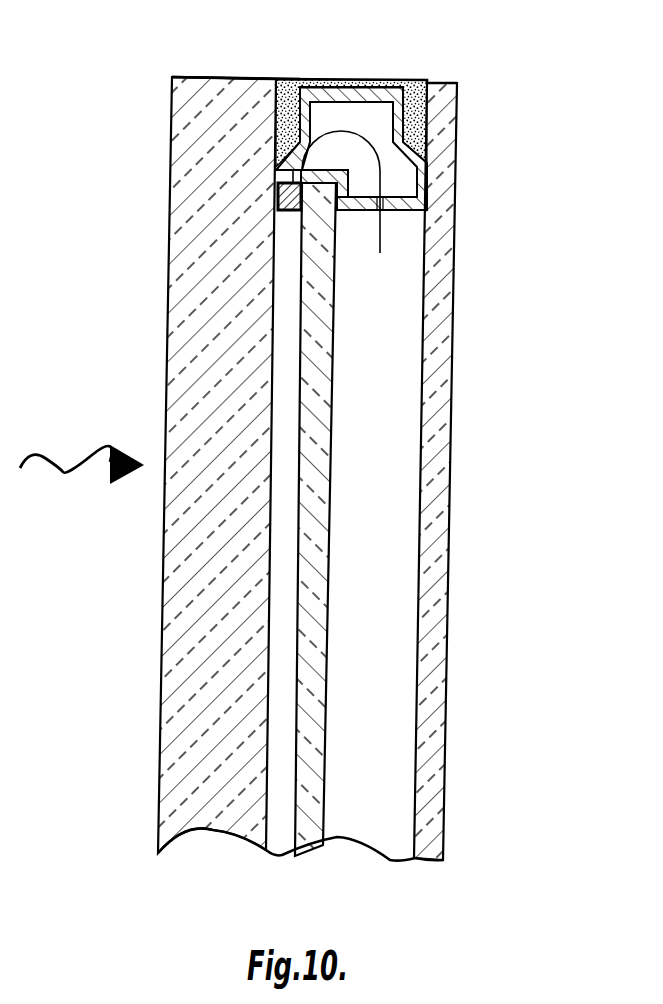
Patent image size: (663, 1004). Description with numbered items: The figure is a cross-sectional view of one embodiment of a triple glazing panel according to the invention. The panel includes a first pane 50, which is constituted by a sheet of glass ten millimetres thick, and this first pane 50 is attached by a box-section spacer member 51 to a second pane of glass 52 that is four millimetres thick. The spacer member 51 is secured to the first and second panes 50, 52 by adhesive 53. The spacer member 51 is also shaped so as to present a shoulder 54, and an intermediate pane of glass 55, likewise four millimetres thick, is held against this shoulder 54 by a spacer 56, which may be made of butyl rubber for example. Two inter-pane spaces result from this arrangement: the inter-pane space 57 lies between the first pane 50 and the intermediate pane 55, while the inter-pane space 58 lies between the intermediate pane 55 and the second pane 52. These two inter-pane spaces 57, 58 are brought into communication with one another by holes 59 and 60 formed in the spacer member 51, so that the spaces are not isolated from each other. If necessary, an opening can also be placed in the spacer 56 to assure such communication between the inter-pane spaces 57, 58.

The first pane 50 is at (220, 538).
The box-section spacer member 51 is at (300, 78).
The second pane of glass 52 is at (458, 85).
The adhesive 53 is at (407, 83).
The shoulder 54 is at (340, 208).
The intermediate pane of glass 55 is at (317, 535).
The spacer 56 is at (292, 210).
The inter-pane space 57 is at (293, 795).
The inter-pane space 58 is at (383, 798).
The hole 59 is at (383, 193).
The hole 60 is at (293, 168).